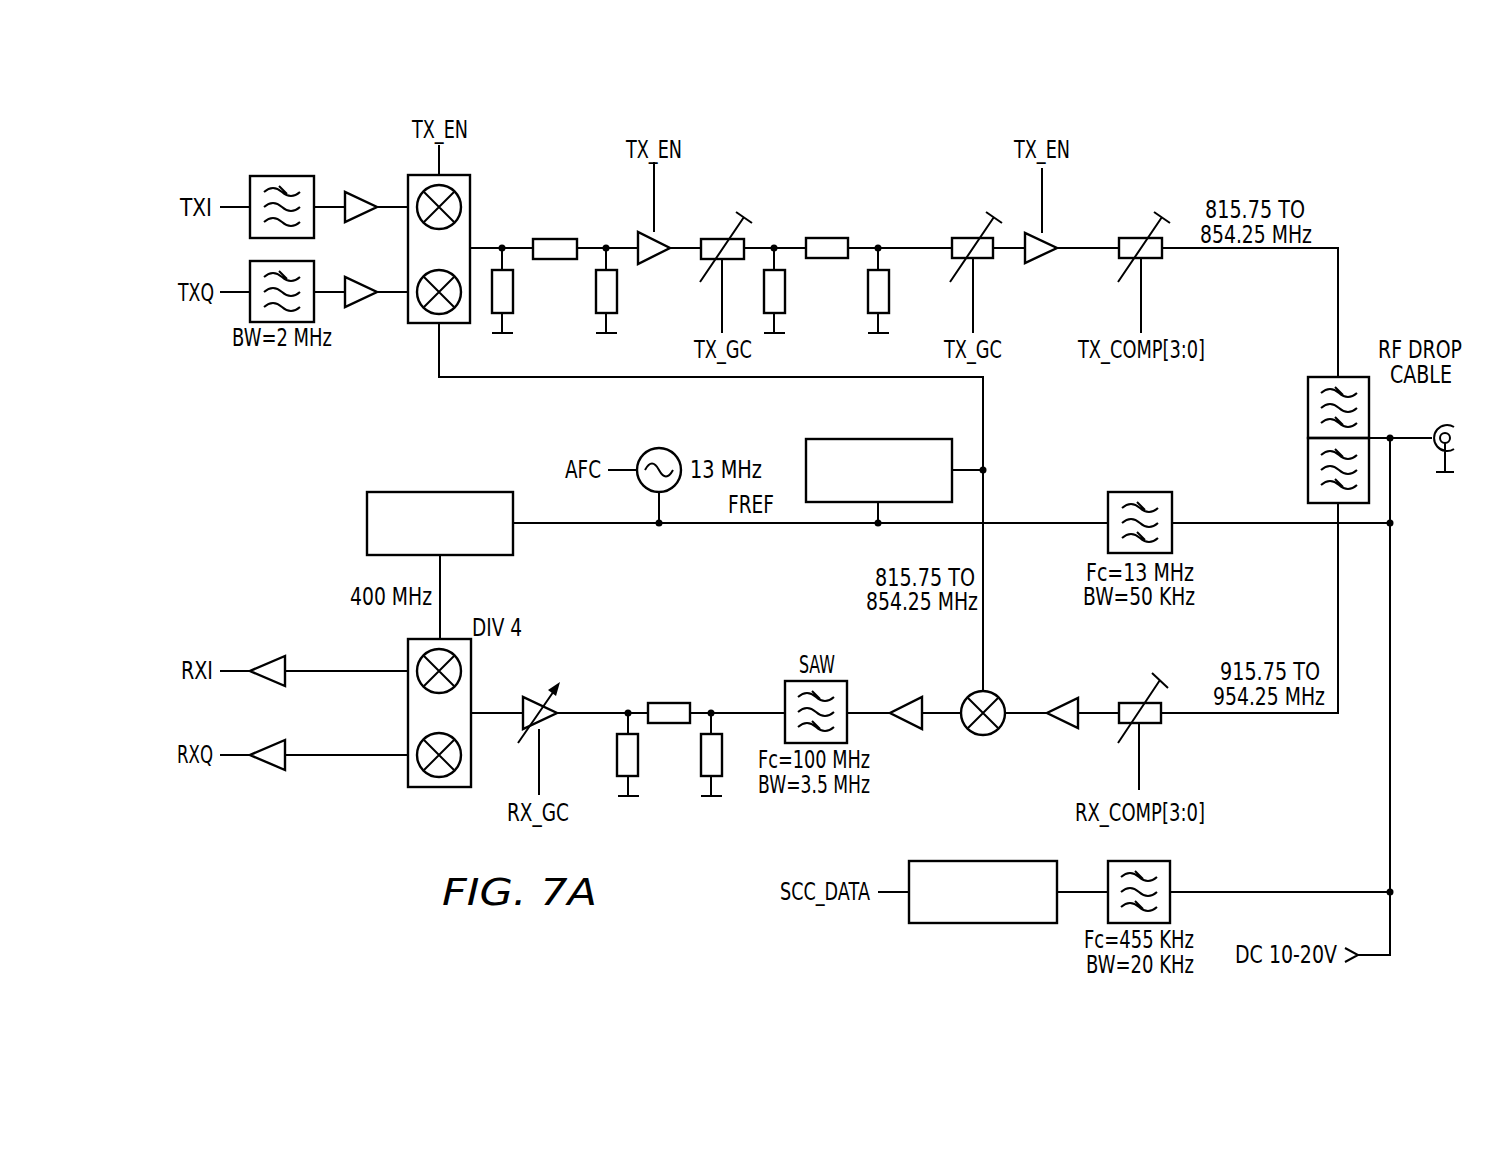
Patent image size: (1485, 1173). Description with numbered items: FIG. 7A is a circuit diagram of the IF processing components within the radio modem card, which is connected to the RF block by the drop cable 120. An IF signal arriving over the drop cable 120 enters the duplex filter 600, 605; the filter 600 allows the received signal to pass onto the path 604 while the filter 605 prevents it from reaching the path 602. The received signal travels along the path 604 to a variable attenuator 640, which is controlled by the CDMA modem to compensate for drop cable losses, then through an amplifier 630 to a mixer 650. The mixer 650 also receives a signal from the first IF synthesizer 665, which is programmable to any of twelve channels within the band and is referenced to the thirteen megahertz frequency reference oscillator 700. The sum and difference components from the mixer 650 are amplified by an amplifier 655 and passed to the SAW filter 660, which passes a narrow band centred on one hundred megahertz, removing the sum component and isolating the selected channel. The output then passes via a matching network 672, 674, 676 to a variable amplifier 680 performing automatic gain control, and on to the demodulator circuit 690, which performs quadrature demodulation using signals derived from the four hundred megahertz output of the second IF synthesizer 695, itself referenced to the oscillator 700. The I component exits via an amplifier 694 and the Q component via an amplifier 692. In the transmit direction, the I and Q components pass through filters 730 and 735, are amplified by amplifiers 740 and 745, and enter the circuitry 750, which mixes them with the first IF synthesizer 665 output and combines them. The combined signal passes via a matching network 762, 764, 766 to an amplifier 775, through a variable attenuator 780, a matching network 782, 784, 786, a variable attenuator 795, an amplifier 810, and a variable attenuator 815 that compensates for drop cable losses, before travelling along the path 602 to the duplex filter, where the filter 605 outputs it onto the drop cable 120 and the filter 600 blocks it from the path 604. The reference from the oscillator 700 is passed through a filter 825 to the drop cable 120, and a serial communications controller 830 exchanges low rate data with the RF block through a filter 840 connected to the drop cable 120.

The filter 730 is at (280, 176).
The filter 735 is at (250, 283).
The amplifier 740 is at (365, 192).
The amplifier 745 is at (365, 307).
The circuitry 750 is at (408, 255).
The matching network 762 is at (513, 300).
The matching network 764 is at (617, 300).
The matching network 766 is at (558, 239).
The amplifier 775 is at (655, 263).
The variable attenuator 780 is at (712, 239).
The matching network 782 is at (785, 300).
The matching network 784 is at (889, 300).
The matching network 786 is at (828, 238).
The variable attenuator 795 is at (962, 238).
The amplifier 810 is at (1044, 262).
The variable attenuator 815 is at (1132, 238).
The path 602 is at (1340, 312).
The filter 605 is at (1308, 410).
The filter 600 is at (1308, 472).
The drop cable 120 is at (1409, 436).
The path 604 is at (1338, 578).
The first IF synthesizer 665 is at (868, 439).
The 13 MHz frequency reference oscillator 700 is at (655, 448).
The filter 825 is at (1145, 492).
The second IF synthesizer 695 is at (430, 492).
The demodulator circuit 690 is at (408, 718).
The amplifier 694 is at (262, 657).
The amplifier 692 is at (262, 770).
The variable amplifier 680 is at (535, 700).
The matching network 672 is at (617, 758).
The matching network 674 is at (666, 703).
The matching network 676 is at (701, 762).
The SAW filter 660 is at (783, 700).
The amplifier 655 is at (905, 700).
The mixer 650 is at (986, 736).
The amplifier 630 is at (1059, 700).
The variable attenuator 640 is at (1132, 703).
The serial communications controller 830 is at (985, 861).
The filter 840 is at (1172, 880).